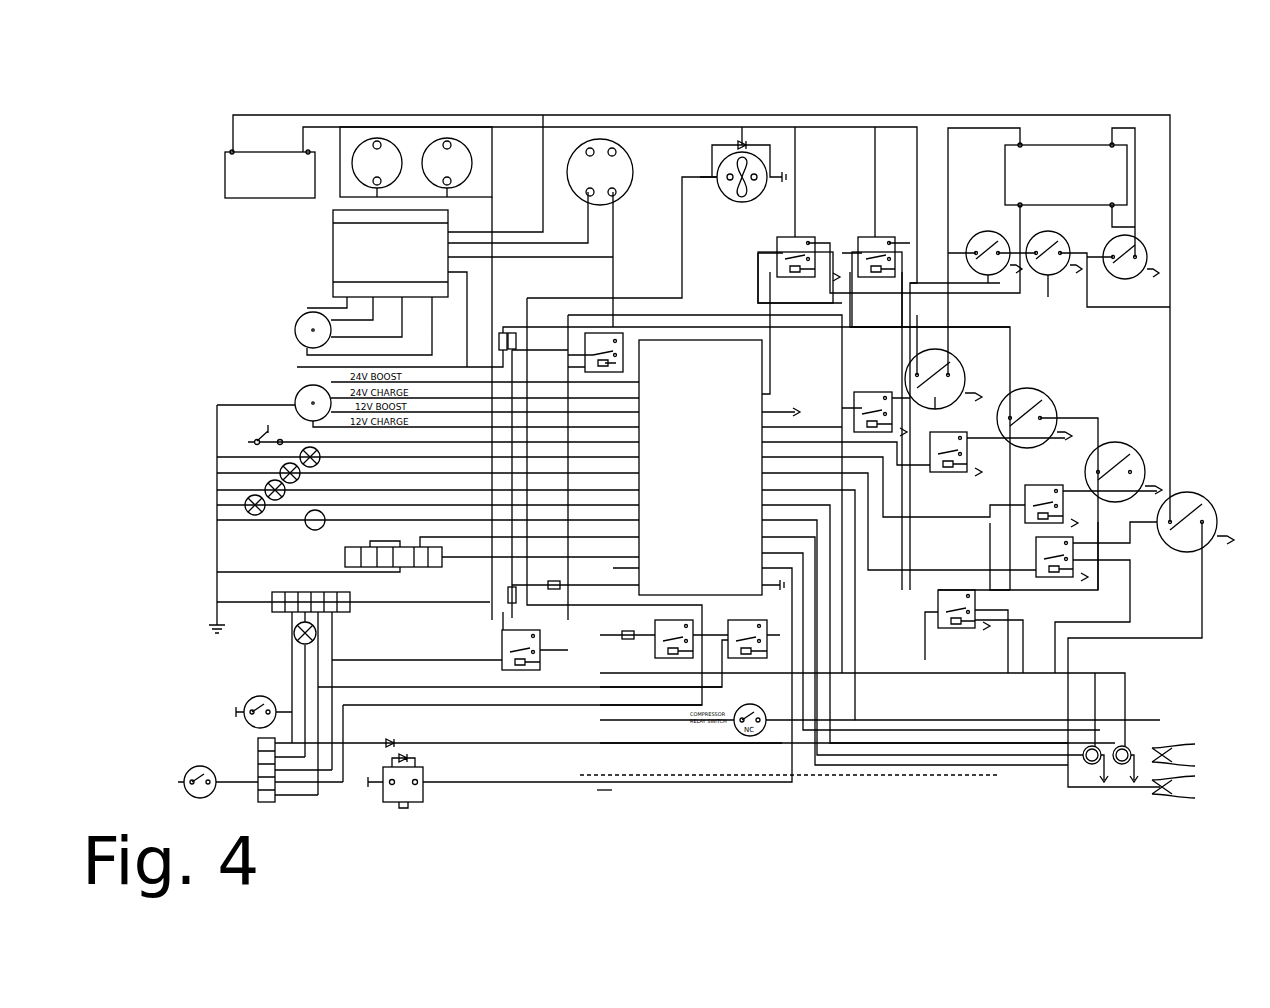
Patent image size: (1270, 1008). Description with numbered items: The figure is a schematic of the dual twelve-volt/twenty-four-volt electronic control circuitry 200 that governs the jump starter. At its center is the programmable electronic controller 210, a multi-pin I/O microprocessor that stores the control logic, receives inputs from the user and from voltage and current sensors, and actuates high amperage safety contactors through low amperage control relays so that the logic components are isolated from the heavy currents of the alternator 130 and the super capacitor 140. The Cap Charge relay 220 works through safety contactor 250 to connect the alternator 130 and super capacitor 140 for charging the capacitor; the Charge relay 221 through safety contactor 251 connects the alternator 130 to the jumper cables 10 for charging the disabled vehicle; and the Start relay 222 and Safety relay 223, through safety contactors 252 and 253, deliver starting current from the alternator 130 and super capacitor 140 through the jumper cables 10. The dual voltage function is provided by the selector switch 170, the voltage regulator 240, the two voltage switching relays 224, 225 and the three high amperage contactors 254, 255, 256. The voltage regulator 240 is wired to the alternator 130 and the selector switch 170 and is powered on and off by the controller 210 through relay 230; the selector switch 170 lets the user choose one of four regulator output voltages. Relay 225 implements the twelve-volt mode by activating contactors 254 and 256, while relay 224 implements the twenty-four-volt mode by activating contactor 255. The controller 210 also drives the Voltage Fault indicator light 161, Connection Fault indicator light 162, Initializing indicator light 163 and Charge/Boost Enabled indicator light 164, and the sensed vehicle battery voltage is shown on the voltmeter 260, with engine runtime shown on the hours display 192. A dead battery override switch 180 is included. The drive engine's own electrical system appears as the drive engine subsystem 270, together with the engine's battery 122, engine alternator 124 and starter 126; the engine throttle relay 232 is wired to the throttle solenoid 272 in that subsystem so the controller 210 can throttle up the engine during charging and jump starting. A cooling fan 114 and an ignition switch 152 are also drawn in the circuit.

The jumper cables 10 is at (1188, 772).
The cooling fan 114 is at (762, 158).
The battery 122 is at (250, 200).
The engine alternator 124 is at (365, 140).
The starter 126 is at (432, 140).
The alternator 130 is at (580, 147).
The super capacitor 140 is at (1065, 142).
The ignition switch 152 is at (350, 612).
The Voltage Fault indicator light 161 is at (300, 455).
The Connection Fault indicator light 162 is at (265, 488).
The Initializing indicator light 163 is at (280, 472).
The Charge/Boost Enabled indicator light 164 is at (245, 508).
The selector switch 170 is at (310, 388).
The dead battery override switch 180 is at (258, 432).
The engine runtime hours display 192 is at (305, 527).
The control circuitry 200 is at (672, 786).
The programmable electronic controller 210 is at (703, 335).
The Cap Charge relay 220 is at (862, 392).
The Charge relay 221 is at (963, 472).
The Start relay 222 is at (1022, 510).
The Safety relay 223 is at (1045, 578).
The voltage switching relay 224 is at (795, 237).
The voltage switching relay 225 is at (875, 237).
The relay 230 is at (600, 330).
The engine throttle relay 232 is at (935, 602).
The voltage regulator 240 is at (333, 252).
The safety contactor 250 is at (965, 368).
The safety contactor 251 is at (1052, 405).
The safety contactor 252 is at (1140, 453).
The safety contactor 253 is at (1210, 503).
The high amperage contactor 254 is at (980, 232).
The high amperage contactor 255 is at (1048, 277).
The high amperage contactor 256 is at (1150, 258).
The voltmeter 260 is at (420, 572).
The drive engine subsystem 270 is at (298, 808).
The throttle solenoid 272 is at (425, 790).